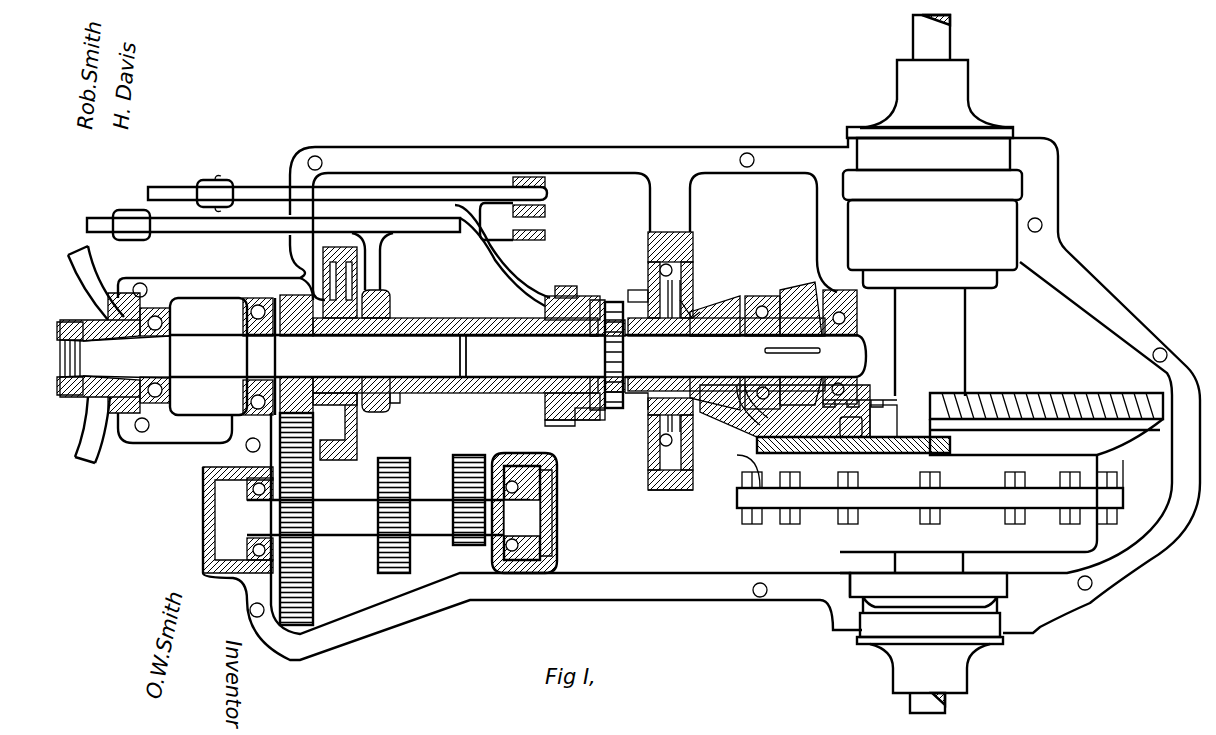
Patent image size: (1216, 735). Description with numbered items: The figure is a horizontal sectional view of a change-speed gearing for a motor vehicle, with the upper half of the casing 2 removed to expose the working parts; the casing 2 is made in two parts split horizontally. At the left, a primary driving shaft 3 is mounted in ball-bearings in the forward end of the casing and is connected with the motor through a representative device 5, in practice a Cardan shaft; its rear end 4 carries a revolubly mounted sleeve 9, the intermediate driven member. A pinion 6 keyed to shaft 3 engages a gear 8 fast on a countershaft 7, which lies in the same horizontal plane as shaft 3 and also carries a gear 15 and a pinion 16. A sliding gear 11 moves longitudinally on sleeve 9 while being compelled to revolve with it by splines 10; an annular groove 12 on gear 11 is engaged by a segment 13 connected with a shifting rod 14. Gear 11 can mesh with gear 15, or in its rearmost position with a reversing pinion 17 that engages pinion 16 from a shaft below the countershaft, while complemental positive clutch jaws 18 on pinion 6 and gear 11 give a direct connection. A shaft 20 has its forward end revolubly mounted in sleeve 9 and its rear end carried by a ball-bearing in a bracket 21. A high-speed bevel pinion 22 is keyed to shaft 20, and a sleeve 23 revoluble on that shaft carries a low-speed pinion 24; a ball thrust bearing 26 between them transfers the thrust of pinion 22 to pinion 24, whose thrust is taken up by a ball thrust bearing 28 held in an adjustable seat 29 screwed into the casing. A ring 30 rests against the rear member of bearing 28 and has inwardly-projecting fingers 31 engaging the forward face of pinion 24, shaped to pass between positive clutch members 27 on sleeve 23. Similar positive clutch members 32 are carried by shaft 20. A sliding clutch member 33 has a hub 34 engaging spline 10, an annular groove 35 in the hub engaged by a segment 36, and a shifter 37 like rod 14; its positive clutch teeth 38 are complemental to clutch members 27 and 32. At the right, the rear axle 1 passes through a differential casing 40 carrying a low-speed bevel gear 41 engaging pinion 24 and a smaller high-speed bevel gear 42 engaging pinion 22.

The rear axle 1 is at (945, 43).
The casing 2 is at (742, 153).
The primary driving shaft 3 is at (207, 356).
The rear end of shaft 4 is at (461, 358).
The connecting device 5 is at (85, 280).
The pinion 6 is at (290, 300).
The countershaft 7 is at (366, 520).
The gear 8 is at (313, 572).
The sleeve 9 is at (420, 325).
The splines 10 is at (470, 322).
The sliding gear 11 is at (372, 405).
The annular groove 12 is at (372, 404).
The segment 13 is at (378, 294).
The shifting rod 14 is at (415, 225).
The gear 15 is at (400, 575).
The pinion 16 is at (470, 548).
The reversing pinion 17 is at (470, 455).
The positive clutch jaws 18 is at (322, 450).
The shaft 20 is at (633, 355).
The bracket 21 is at (860, 305).
The bevel pinion 22 is at (783, 292).
The sleeve 23 is at (711, 377).
The pinion 24 is at (710, 300).
The ball thrust bearing 26 is at (760, 305).
The positive clutch members 27 is at (612, 420).
The ball thrust bearing 28 is at (655, 245).
The adjustable seat 29 is at (645, 258).
The ring 30 is at (742, 420).
The fingers 31 is at (690, 305).
The positive clutch members 32 is at (590, 420).
The sliding clutch member 33 is at (640, 481).
The hub 34 is at (554, 355).
The annular groove 35 is at (555, 421).
The segment 36 is at (565, 295).
The shifter 37 is at (342, 190).
The positive clutch teeth 38 is at (635, 292).
The differential casing 40 is at (993, 467).
The low-speed bevel gear 41 is at (742, 466).
The high-speed bevel gear 42 is at (808, 447).